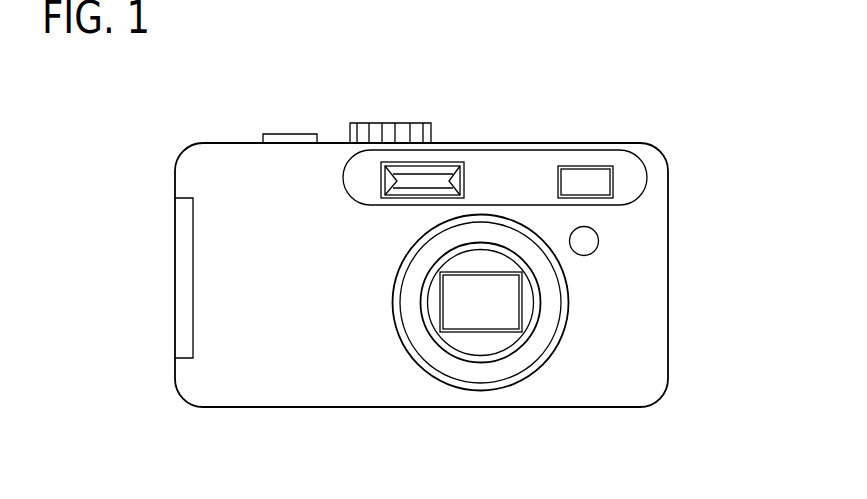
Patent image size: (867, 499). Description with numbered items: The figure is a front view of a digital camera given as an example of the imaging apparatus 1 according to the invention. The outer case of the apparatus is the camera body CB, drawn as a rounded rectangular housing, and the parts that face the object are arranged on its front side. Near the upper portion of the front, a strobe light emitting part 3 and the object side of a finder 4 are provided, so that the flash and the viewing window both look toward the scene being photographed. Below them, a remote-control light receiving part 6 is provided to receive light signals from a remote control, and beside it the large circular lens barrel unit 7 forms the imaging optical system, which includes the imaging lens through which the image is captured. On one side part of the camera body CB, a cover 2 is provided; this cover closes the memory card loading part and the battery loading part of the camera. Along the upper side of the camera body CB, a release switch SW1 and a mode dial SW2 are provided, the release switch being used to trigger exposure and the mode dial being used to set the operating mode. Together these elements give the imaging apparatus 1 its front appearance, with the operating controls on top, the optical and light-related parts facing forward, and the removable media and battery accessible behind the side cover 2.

The imaging apparatus 1 is at (221, 121).
The cover 2 is at (183, 262).
The release switch SW1 is at (290, 138).
The mode dial SW2 is at (394, 123).
The camera body CB is at (668, 190).
The strobe light emitting part 3 is at (446, 170).
The finder 4 is at (590, 178).
The remote-control light receiving part 6 is at (599, 237).
The lens barrel unit 7 is at (527, 308).